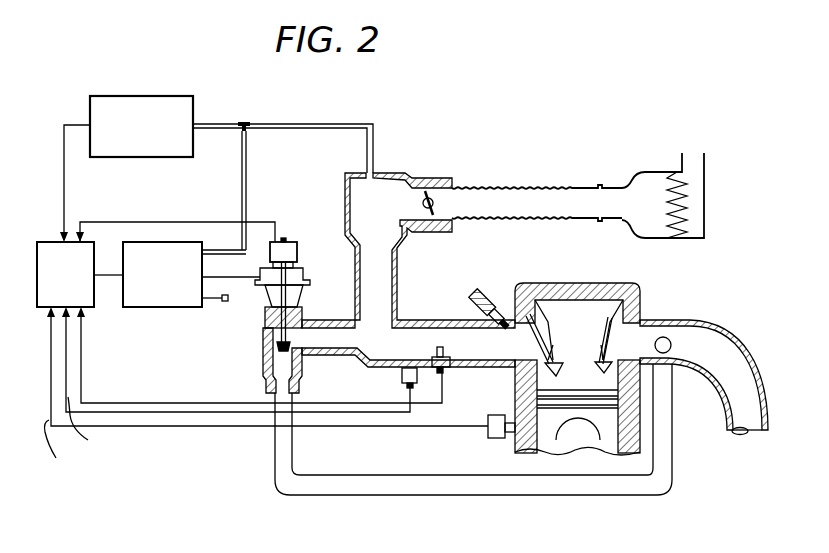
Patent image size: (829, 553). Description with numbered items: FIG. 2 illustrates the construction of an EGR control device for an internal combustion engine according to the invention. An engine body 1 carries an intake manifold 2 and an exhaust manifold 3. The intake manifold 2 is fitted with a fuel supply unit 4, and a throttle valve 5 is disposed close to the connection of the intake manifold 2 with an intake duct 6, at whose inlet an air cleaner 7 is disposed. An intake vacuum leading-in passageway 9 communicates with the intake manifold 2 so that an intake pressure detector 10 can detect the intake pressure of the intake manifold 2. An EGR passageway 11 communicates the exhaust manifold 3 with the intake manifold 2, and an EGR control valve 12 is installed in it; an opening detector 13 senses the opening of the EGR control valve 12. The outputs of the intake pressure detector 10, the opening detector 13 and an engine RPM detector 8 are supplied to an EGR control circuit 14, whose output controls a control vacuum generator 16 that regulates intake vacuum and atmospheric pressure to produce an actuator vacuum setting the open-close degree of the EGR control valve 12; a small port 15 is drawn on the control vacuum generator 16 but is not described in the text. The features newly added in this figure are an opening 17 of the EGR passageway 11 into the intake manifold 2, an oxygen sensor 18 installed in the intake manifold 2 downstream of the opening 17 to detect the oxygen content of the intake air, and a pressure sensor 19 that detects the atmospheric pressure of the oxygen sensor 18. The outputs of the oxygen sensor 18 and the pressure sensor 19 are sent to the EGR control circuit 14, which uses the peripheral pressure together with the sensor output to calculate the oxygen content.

The engine body 1 is at (644, 296).
The intake manifold 2 is at (388, 350).
The exhaust manifold 3 is at (710, 348).
The fuel supply unit 4 is at (479, 291).
The throttle valve 5 is at (430, 180).
The intake duct 6 is at (525, 188).
The air cleaner 7 is at (650, 171).
The engine RPM detector 8 is at (495, 440).
The intake vacuum leading-in passageway 9 is at (291, 123).
The intake pressure detector 10 is at (195, 108).
The EGR passageway 11 is at (318, 345).
The EGR control valve 12 is at (262, 300).
The opening detector 13 is at (297, 243).
The EGR control circuit 14 is at (90, 310).
The vacuum port 15 is at (213, 303).
The control vacuum generator 16 is at (172, 309).
The opening 17 is at (353, 343).
The oxygen sensor 18 is at (450, 366).
The pressure sensor 19 is at (418, 380).